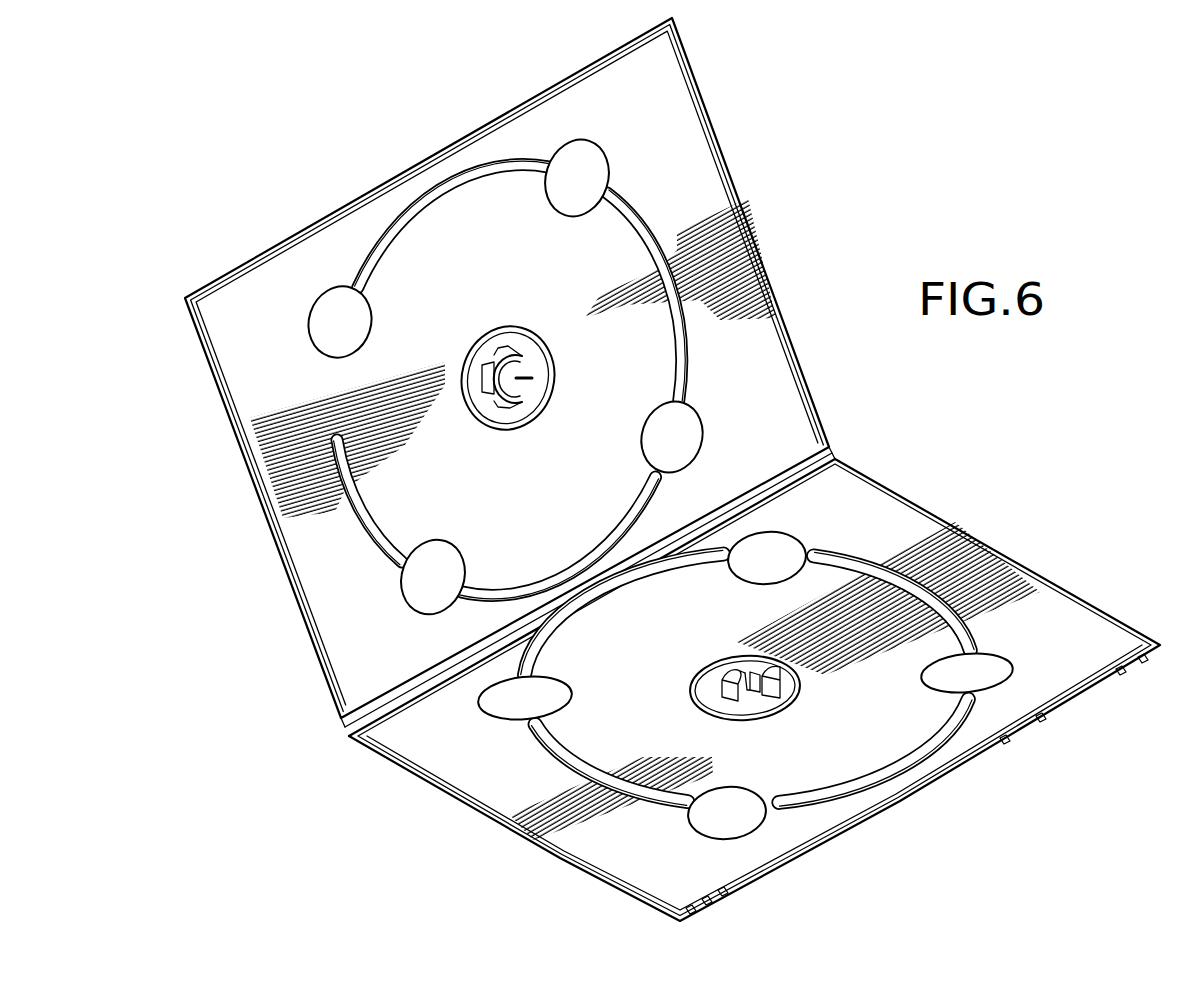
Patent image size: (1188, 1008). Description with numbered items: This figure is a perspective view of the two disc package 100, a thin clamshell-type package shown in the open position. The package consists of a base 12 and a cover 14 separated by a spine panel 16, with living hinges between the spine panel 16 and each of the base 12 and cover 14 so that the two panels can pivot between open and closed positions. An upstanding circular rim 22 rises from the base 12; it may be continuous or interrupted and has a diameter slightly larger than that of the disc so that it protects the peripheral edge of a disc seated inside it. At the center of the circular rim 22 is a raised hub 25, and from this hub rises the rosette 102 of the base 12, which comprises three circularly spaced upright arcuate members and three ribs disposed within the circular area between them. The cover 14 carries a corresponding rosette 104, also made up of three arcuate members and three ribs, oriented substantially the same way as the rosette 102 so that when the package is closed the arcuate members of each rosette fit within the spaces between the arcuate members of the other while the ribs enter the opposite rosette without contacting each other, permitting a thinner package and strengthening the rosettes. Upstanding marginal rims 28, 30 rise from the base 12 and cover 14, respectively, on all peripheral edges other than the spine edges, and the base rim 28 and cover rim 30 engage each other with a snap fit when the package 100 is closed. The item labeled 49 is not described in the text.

The two disc package 100 is at (316, 760).
The base 12 is at (630, 869).
The cover 14 is at (313, 562).
The spine panel 16 is at (780, 468).
The upstanding circular rim 22 is at (547, 745).
The raised hub 25 is at (788, 690).
The base rim 28 is at (1040, 720).
The cover rim 30 is at (258, 478).
The lid hub 49 is at (540, 384).
The rosette 102 is at (720, 693).
The rosette 104 is at (478, 346).